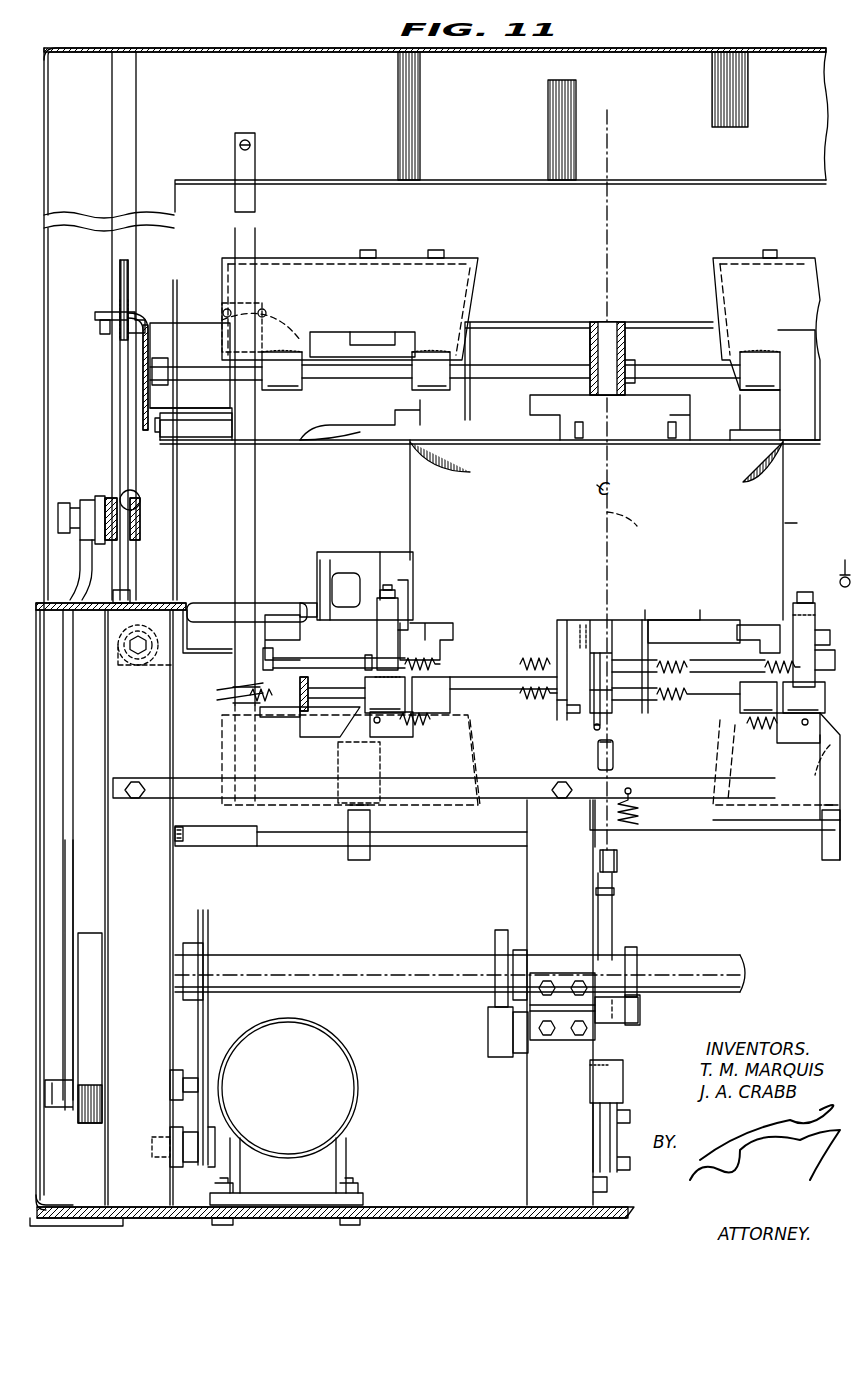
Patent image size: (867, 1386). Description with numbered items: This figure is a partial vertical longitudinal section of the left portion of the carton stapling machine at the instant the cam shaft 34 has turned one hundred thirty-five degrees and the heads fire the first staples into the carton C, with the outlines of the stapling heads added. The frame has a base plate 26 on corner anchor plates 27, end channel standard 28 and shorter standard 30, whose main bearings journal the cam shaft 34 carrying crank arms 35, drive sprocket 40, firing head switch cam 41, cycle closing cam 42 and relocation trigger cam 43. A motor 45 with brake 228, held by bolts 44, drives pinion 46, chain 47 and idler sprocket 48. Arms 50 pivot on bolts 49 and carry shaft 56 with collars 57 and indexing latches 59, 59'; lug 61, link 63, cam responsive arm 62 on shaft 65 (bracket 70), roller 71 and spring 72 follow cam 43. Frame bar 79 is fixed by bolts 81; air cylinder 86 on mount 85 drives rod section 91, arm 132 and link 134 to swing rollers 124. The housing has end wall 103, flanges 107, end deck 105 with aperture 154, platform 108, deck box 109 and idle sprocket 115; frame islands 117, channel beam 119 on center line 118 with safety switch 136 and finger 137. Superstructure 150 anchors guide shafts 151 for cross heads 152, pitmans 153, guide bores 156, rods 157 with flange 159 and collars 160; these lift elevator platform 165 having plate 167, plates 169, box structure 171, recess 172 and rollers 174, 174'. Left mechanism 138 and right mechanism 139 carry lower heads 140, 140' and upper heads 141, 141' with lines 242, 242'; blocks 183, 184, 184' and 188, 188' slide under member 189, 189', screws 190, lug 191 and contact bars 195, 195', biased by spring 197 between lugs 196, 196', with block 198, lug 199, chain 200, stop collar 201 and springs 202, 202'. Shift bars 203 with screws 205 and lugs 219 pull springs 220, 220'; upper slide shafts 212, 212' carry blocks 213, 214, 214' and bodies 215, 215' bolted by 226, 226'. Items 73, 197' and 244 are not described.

The base plate 26 is at (252, 1229).
The corner anchor plates 27 is at (112, 1229).
The end channel standard 28 is at (153, 897).
The standard 30 is at (542, 866).
The cam shaft 34 is at (295, 965).
The crank arms 35 is at (92, 1011).
The drive sprocket 40 is at (170, 962).
The stapling firing head switch cam 41 is at (483, 965).
The cycle closing cam 42 is at (522, 950).
The stapling head relocation trigger cam 43 is at (632, 947).
The bolts 44 is at (340, 1187).
The geared-down electric motor 45 is at (313, 1164).
The drive pinion 46 is at (172, 1158).
The endless chain 47 is at (208, 1013).
The idler sprocket 48 is at (172, 1086).
The bolts 49 is at (175, 838).
The arms 50 is at (232, 846).
The shaft 56 is at (714, 830).
The collar 57 is at (364, 856).
The stapling head indexing latch 59 is at (330, 734).
The stapling head indexing latch 59' is at (776, 766).
The lug 61 is at (626, 857).
The cam responsive arm 62 is at (608, 1022).
The adjustable link 63 is at (610, 918).
The shaft 65 is at (560, 990).
The bracket 70 is at (563, 1034).
The cam responsive roller 71 is at (640, 1011).
The contractile spring 72 is at (640, 819).
The block 73 is at (490, 1049).
The horizontal frame bar 79 is at (190, 786).
The bolts 81 is at (133, 782).
The air cylinder mount 85 is at (602, 1130).
The air cylinder 86 is at (598, 1083).
The extensible rod section 91 is at (614, 757).
The end wall 103 is at (45, 732).
The end deck 105 is at (180, 606).
The flange 107 is at (66, 1202).
The supporting platform 108 is at (201, 650).
The deck box 109 is at (200, 605).
The idle sprocket 115 is at (114, 672).
The frame island 117 is at (348, 555).
The center line 118 is at (630, 529).
The inverted channel beam 119 is at (567, 620).
The roller 124 is at (842, 560).
The arm 132 is at (598, 673).
The adjustable link 134 is at (590, 728).
The safety switch 136 is at (587, 620).
The actuating finger 137 is at (634, 620).
The left end stapling mechanism 138 is at (342, 170).
The right end stapling mechanism 139 is at (792, 170).
The lower stapling head 140 is at (281, 621).
The lower stapling head 140' is at (695, 630).
The upper stapling head 141 is at (255, 437).
The upper stapling head 141' is at (822, 455).
The super structure 150 is at (752, 50).
The vertical guide shaft 151 is at (128, 95).
The cross head 152 is at (140, 517).
The pitman 153 is at (70, 827).
The aperture 154 is at (106, 580).
The guide bore 156 is at (138, 491).
The chain-actuating rod 157 is at (122, 385).
The flange 159 is at (110, 340).
The collar 160 is at (120, 601).
The elevator platform 165 is at (540, 303).
The horizontal plate 167 is at (102, 314).
The vertical plate 169 is at (155, 347).
The box structure 171 is at (617, 320).
The upper recess 172 is at (554, 408).
The conveyor roller 174 is at (490, 500).
The conveyor roller 174' is at (721, 530).
The slide block 183 is at (275, 712).
The slide block 184 is at (484, 688).
The slide block 184' is at (759, 697).
The slide block 188 is at (385, 695).
The slide block 188' is at (804, 697).
The inverted U-shaped member 189 is at (414, 633).
The inverted U-shaped member 189' is at (814, 645).
The screws 190 is at (380, 570).
The lug 191 is at (378, 632).
The carton contact bar 195 is at (416, 590).
The carton contact bar 195' is at (826, 583).
The lug 196 is at (401, 735).
The lug 196' is at (795, 747).
The contractile spring 197 is at (450, 725).
The spring 197' is at (757, 735).
The slide block 198 is at (380, 760).
The lug 199 is at (272, 648).
The roller chain 200 is at (278, 660).
The stop collar 201 is at (365, 664).
The contractile spring 202 is at (477, 657).
The contractile spring 202' is at (706, 666).
The shift bar 203 is at (250, 238).
The screws 205 is at (245, 140).
The slide shaft 212 is at (446, 371).
The slide shaft 212' is at (682, 352).
The slide block 213 is at (282, 371).
The slide block 214 is at (431, 371).
The slide block 214' is at (760, 371).
The upper carriage body 215 is at (350, 290).
The upper carriage body 215' is at (758, 330).
The spring mounting lug 219 is at (235, 700).
The contractile spring 220 is at (395, 704).
The contractile spring 220' is at (676, 717).
The bolts 226 is at (402, 239).
The bolts 226' is at (795, 239).
The brake 228 is at (340, 1071).
The indicating lines 242 is at (393, 530).
The indicating lines 242' is at (772, 524).
The nut 244 is at (100, 332).
The carton C is at (798, 522).